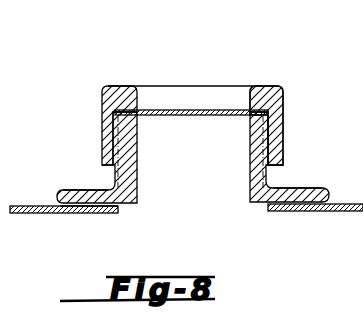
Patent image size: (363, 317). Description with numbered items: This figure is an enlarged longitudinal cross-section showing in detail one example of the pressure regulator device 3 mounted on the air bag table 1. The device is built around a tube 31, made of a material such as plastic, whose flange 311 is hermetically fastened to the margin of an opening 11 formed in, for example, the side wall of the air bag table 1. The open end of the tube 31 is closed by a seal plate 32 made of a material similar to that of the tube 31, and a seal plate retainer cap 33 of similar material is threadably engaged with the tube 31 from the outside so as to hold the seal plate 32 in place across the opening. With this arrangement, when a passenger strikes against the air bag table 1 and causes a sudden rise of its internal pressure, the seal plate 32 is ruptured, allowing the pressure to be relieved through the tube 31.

The air bag table 1 is at (348, 208).
The opening 11 is at (118, 212).
The pressure regulator device 3 is at (263, 95).
The tube 31 is at (137, 167).
The seal plate 32 is at (213, 115).
The seal plate retainer cap 33 is at (284, 122).
The flange 311 is at (306, 188).